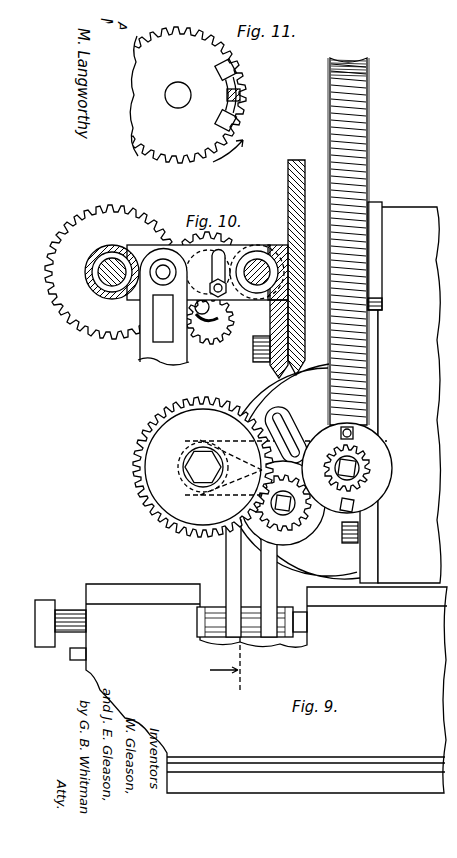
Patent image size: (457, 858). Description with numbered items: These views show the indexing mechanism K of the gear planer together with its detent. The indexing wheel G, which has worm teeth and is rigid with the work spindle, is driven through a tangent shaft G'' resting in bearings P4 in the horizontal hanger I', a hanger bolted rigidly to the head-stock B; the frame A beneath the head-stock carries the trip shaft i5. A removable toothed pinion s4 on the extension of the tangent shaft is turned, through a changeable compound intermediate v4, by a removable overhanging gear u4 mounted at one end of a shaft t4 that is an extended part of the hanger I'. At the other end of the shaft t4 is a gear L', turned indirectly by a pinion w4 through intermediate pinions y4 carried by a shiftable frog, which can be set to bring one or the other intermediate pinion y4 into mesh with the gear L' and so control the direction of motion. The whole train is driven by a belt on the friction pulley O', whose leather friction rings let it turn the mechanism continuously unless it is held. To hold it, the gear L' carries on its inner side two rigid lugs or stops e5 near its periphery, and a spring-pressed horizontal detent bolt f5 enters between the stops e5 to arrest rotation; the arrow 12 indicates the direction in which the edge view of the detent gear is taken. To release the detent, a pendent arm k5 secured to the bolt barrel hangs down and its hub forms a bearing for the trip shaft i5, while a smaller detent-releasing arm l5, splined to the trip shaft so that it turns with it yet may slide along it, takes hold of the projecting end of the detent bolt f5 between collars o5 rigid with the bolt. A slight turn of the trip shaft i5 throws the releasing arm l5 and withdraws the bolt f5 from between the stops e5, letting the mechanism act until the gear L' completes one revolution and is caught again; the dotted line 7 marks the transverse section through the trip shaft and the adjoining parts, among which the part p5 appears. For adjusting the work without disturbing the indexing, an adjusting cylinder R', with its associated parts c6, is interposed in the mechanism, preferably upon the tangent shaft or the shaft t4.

In FIG. 11, the gear L' is at (173, 95).
In FIG. 10, the gear L' is at (112, 272).
In FIG. 11, the rigid lugs or stops e5 is at (220, 76).
In FIG. 11, the detent bolt f5 is at (226, 95).
In FIG. 10, the detent bolt f5 is at (163, 280).
In FIG. 11, the arrow 12 is at (300, 99).
In FIG. 9, the indexing wheel G is at (361, 241).
In FIG. 10, the head-stock B is at (296, 170).
In FIG. 9, the head-stock B is at (404, 392).
In FIG. 10, the horizontal hanger I' is at (112, 261).
In FIG. 9, the horizontal hanger I' is at (377, 441).
In FIG. 10, the intermediate pinions y4 is at (196, 236).
In FIG. 10, the pinion w4 is at (262, 246).
In FIG. 10, the collars o5 is at (177, 272).
In FIG. 10, the bearings P4 is at (221, 262).
In FIG. 10, the shaft t4 is at (112, 290).
In FIG. 10, the tangent shaft G'' is at (257, 303).
In FIG. 10, the pendent arm k5 is at (140, 354).
In FIG. 9, the pendent arm k5 is at (235, 552).
In FIG. 10, the detent-releasing arm l5 is at (163, 342).
In FIG. 9, the detent-releasing arm l5 is at (268, 570).
In FIG. 9, the friction pulley O' is at (279, 423).
In FIG. 9, the indexing mechanism K is at (292, 471).
In FIG. 9, the overhanging gear u4 is at (203, 467).
In FIG. 9, the screw c6 is at (340, 433).
In FIG. 9, the toothed pinion s4 is at (354, 468).
In FIG. 9, the adjusting cylinder R' is at (356, 468).
In FIG. 9, the compound intermediate v4 is at (300, 545).
In FIG. 9, the trip shaft i5 is at (70, 614).
In FIG. 9, the head p5 is at (50, 642).
In FIG. 9, the dotted line 7 is at (230, 664).
In FIG. 9, the bed A is at (266, 688).